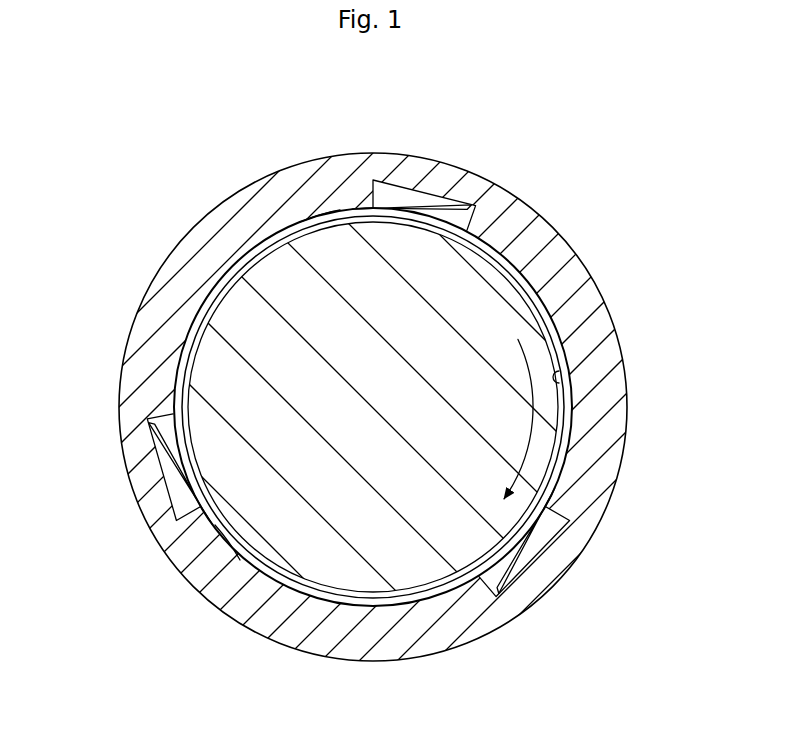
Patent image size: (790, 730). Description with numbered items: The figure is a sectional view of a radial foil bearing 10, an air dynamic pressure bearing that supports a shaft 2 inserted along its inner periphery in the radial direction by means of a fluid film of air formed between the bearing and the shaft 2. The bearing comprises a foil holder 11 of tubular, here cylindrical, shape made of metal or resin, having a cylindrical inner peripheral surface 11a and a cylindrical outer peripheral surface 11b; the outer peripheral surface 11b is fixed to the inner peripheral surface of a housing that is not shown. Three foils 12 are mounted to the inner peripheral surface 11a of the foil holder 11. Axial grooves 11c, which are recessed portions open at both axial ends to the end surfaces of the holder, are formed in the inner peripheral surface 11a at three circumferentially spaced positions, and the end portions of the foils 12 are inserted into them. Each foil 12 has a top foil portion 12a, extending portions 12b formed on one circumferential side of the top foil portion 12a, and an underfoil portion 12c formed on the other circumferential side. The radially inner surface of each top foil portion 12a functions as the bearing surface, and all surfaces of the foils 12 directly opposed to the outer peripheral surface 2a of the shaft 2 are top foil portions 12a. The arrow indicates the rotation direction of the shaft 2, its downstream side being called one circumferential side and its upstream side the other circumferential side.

The shaft 2 is at (395, 410).
The outer peripheral surface of the shaft 2a is at (207, 298).
The radial foil bearing 10 is at (395, 410).
The foil holder 11 is at (395, 410).
The inner peripheral surface of the foil holder 11a is at (567, 372).
The outer peripheral surface of the foil holder 11b is at (272, 174).
The axial grooves 11c is at (405, 190).
The foils 12 is at (325, 404).
The top foil portion 12a is at (318, 222).
The extending portions 12b is at (459, 206).
The underfoil portion 12c is at (320, 214).